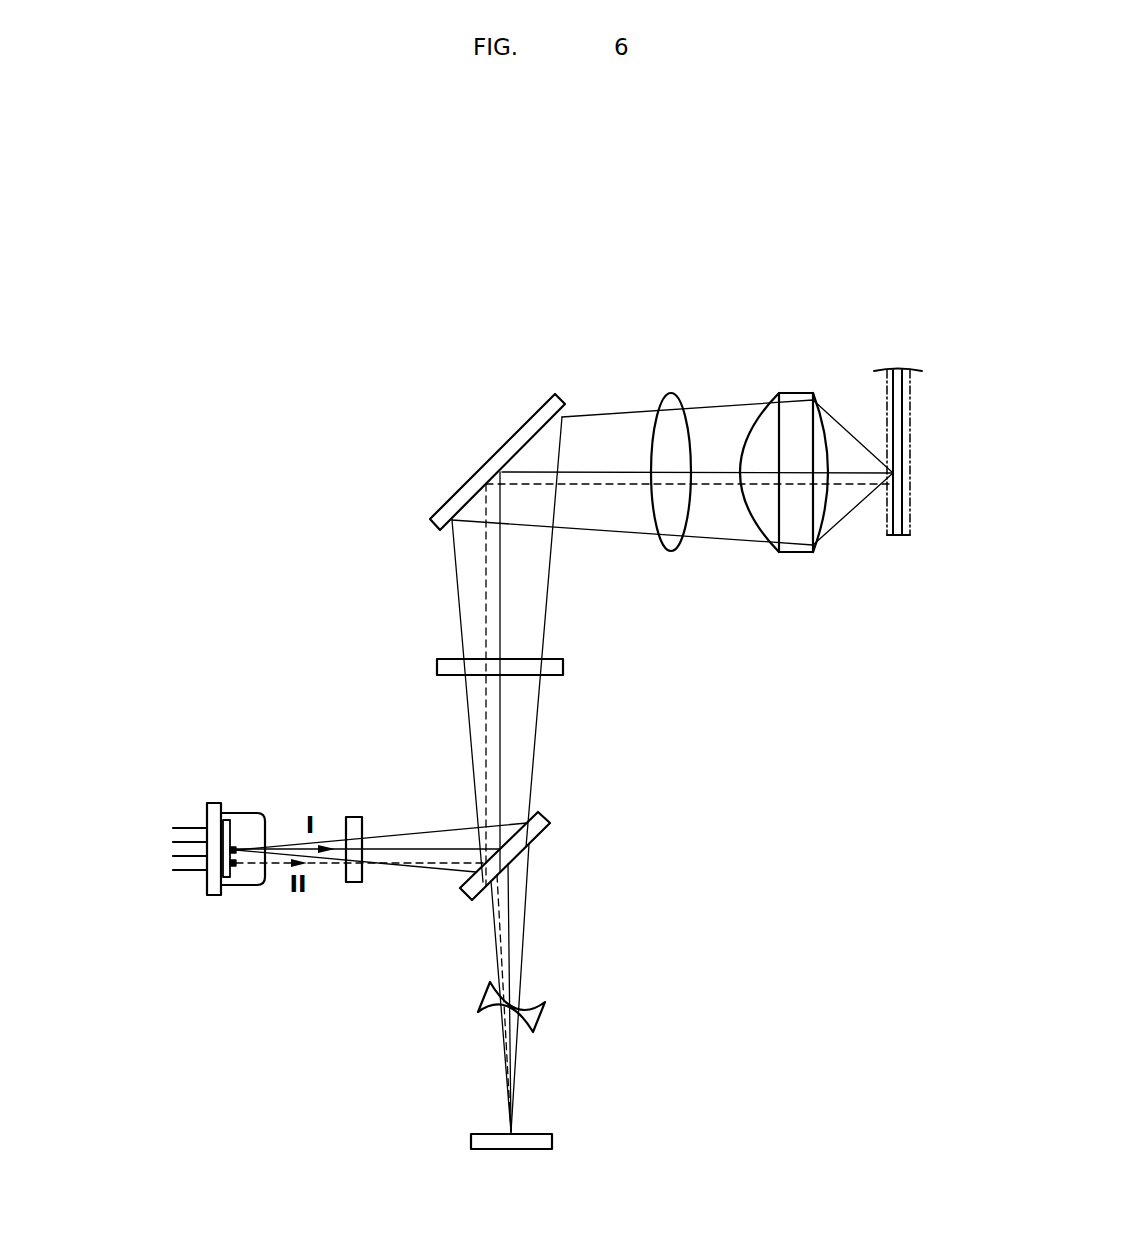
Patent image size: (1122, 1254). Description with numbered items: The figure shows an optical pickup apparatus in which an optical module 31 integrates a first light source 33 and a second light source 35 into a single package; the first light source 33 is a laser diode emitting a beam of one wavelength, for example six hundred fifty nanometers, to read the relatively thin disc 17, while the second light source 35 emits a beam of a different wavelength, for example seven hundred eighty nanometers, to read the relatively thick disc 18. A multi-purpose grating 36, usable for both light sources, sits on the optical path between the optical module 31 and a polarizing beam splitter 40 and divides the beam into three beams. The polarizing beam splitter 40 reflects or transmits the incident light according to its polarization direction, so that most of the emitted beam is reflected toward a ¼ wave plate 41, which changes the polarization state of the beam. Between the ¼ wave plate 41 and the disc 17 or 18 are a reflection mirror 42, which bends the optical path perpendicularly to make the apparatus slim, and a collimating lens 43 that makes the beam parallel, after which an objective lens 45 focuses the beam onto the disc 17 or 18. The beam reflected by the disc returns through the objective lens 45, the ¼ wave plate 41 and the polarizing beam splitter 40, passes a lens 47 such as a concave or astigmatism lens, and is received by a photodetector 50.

The disc 17 is at (898, 537).
The disc 18 is at (912, 427).
The optical module 31 is at (188, 918).
The first light source 33 is at (238, 848).
The second light source 35 is at (238, 868).
The multi-purpose grating 36 is at (353, 817).
The polarizing beam splitter 40 is at (545, 830).
The ¼ wave plate 41 is at (563, 668).
The reflection mirror 42 is at (472, 476).
The collimating lens 43 is at (669, 392).
The objective lens 45 is at (797, 398).
The lens 47 is at (538, 1015).
The photodetector 50 is at (552, 1140).